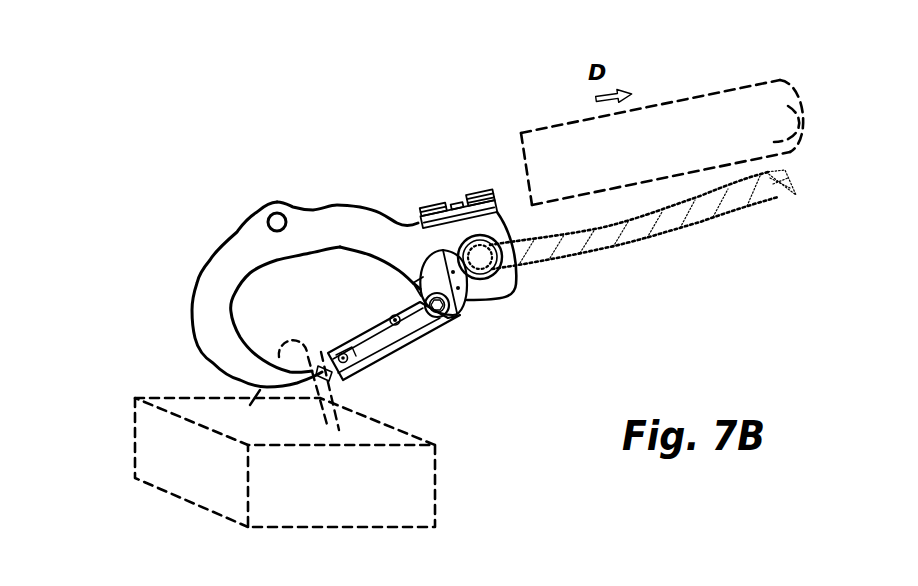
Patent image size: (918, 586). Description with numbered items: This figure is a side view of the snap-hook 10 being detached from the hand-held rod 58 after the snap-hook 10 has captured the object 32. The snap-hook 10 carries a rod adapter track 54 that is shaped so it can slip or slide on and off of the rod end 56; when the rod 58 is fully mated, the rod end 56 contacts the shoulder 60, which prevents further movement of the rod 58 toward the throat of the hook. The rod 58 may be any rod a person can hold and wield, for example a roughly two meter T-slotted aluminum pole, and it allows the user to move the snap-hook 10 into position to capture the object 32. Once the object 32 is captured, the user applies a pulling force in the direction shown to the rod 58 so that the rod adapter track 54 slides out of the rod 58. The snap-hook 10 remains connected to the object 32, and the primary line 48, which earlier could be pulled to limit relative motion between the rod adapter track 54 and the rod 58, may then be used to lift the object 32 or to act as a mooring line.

The snap-hook 10 is at (186, 209).
The object 32 is at (135, 464).
The primary line 48 is at (562, 259).
The rod adapter track 54 is at (442, 199).
The rod end 56 is at (528, 172).
The hand-held rod 58 is at (740, 87).
The shoulder 60 is at (416, 226).